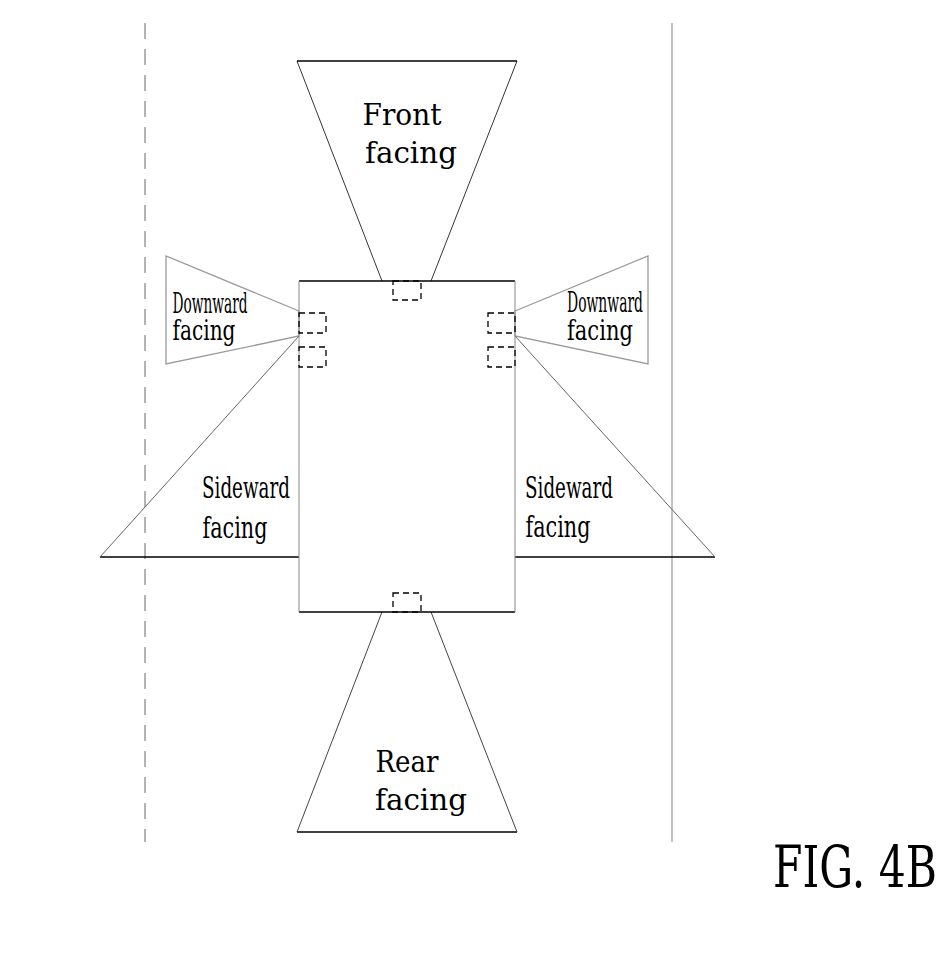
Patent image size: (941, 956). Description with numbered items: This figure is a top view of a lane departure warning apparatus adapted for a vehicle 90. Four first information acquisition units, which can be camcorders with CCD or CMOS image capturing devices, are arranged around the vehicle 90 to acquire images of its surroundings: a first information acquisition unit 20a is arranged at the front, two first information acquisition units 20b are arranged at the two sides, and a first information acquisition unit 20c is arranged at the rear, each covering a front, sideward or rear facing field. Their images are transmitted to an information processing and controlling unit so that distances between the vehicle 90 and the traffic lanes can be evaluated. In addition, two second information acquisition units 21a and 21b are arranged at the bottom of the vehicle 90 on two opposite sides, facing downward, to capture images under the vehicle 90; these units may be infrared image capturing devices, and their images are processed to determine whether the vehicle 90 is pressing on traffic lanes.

The vehicle 90 is at (310, 580).
The first information acquisition unit 20a is at (405, 300).
The first information acquisition units 20b is at (310, 368).
The first information acquisition unit 20c is at (406, 592).
The second information acquisition unit 21a is at (314, 312).
The second information acquisition unit 21b is at (500, 312).